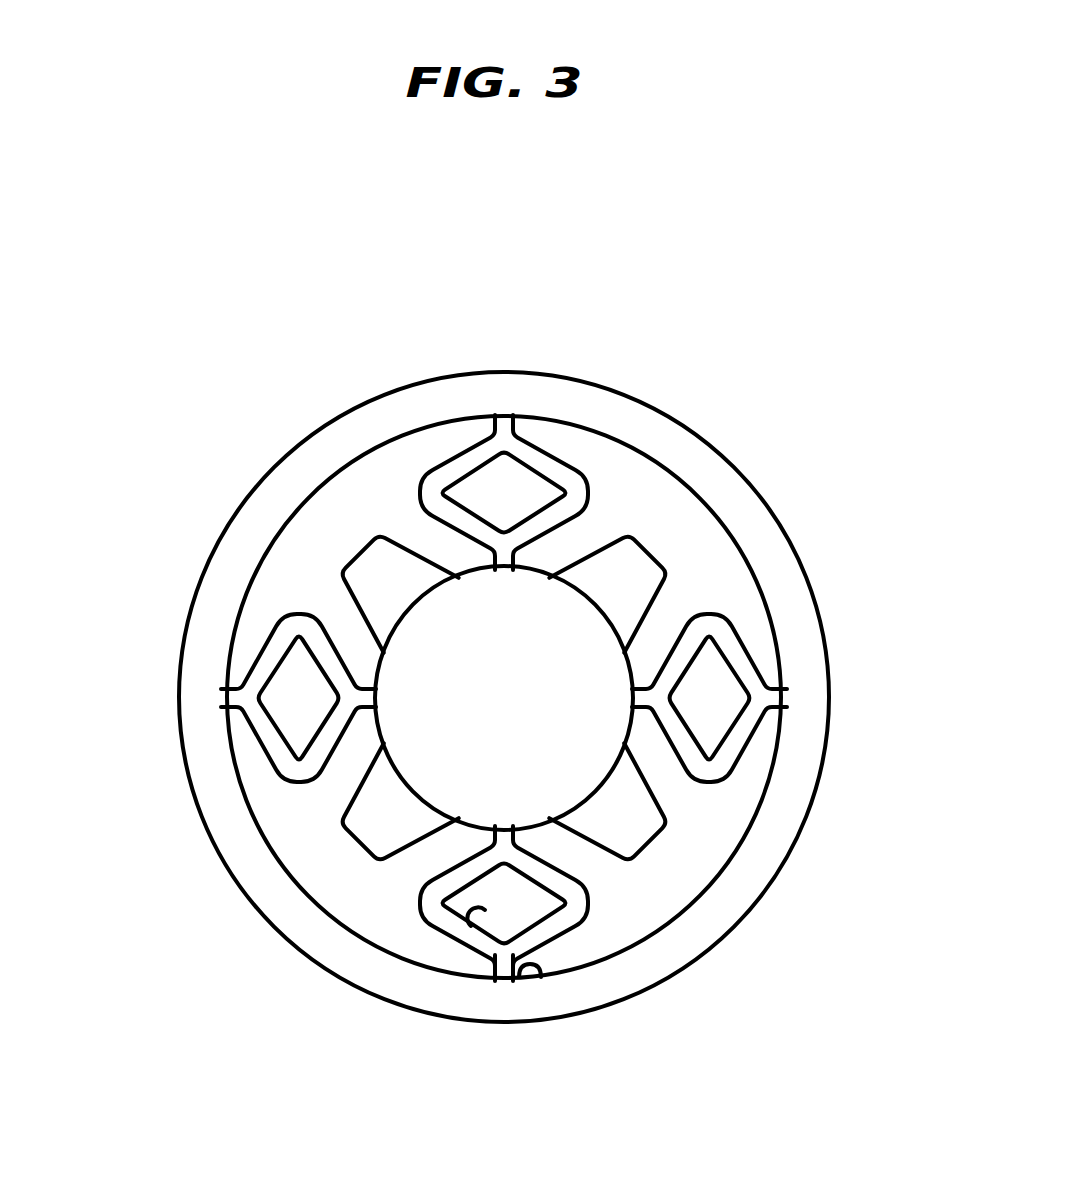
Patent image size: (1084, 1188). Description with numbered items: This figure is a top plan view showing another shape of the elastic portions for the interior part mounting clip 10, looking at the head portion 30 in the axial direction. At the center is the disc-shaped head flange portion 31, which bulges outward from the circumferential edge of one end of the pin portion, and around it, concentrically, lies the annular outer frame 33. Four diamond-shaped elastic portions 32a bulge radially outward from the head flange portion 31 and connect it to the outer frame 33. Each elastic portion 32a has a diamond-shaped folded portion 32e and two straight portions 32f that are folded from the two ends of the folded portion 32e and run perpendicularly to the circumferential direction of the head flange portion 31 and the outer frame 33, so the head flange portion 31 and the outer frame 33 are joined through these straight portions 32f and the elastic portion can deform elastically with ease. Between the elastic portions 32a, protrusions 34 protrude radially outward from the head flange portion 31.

The lens unit 10 is at (770, 396).
The head portion 30 is at (157, 804).
The head flange portion 31 is at (377, 735).
The diamond-shaped elastic portion 32a is at (557, 460).
The folded portion 32e is at (471, 926).
The straight portion 32f is at (453, 825).
The outer frame 33 is at (824, 770).
The protrusion 34 is at (365, 543).